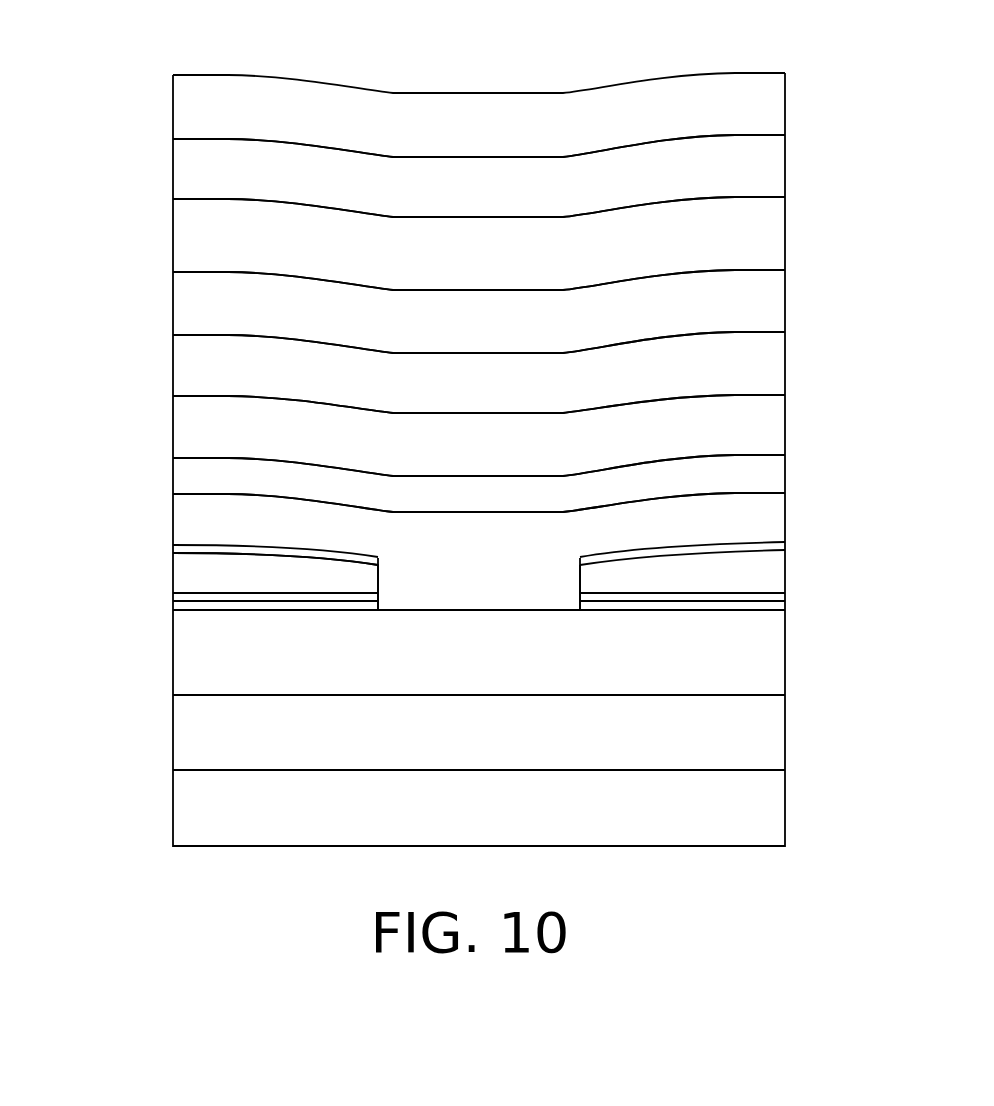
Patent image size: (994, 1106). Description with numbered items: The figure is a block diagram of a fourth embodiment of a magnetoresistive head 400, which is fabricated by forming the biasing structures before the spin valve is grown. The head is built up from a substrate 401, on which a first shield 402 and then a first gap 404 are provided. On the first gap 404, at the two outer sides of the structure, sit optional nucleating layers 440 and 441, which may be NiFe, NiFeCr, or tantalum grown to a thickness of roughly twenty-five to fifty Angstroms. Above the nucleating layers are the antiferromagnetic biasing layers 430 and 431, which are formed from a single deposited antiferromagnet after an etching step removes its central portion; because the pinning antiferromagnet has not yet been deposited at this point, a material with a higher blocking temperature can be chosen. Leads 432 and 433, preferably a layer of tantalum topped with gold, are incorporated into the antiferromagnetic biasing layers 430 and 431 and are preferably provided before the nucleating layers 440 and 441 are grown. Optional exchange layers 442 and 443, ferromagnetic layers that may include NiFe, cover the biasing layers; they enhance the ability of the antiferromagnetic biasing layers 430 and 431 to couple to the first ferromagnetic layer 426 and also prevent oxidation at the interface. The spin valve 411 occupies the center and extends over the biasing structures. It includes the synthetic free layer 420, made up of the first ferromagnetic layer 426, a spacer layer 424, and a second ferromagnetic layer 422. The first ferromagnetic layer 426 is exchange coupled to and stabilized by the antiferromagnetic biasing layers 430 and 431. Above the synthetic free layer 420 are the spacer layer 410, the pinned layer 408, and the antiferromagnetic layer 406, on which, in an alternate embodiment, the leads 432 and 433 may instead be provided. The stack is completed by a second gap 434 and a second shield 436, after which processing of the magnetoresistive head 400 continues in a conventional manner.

The magnetoresistive head 400 is at (487, 23).
The substrate 401 is at (786, 810).
The first shield 402 is at (786, 730).
The first gap 404 is at (786, 670).
The antiferromagnetic layer 406 is at (786, 237).
The pinned layer 408 is at (786, 298).
The spacer layer 410 is at (786, 360).
The spin valve 411 is at (88, 200).
The synthetic free layer 420 is at (160, 398).
The second ferromagnetic layer 422 is at (786, 418).
The spacer layer of the synthetic free layer 424 is at (786, 463).
The first ferromagnetic layer 426 is at (786, 510).
The antiferromagnetic biasing layer 430 is at (173, 571).
The antiferromagnetic biasing layer 431 is at (786, 567).
The lead 432 is at (173, 608).
The lead 433 is at (786, 610).
The second gap 434 is at (786, 165).
The second shield 436 is at (786, 98).
The nucleating layer 440 is at (173, 598).
The nucleating layer 441 is at (786, 595).
The exchange layer 442 is at (173, 552).
The exchange layer 443 is at (786, 547).